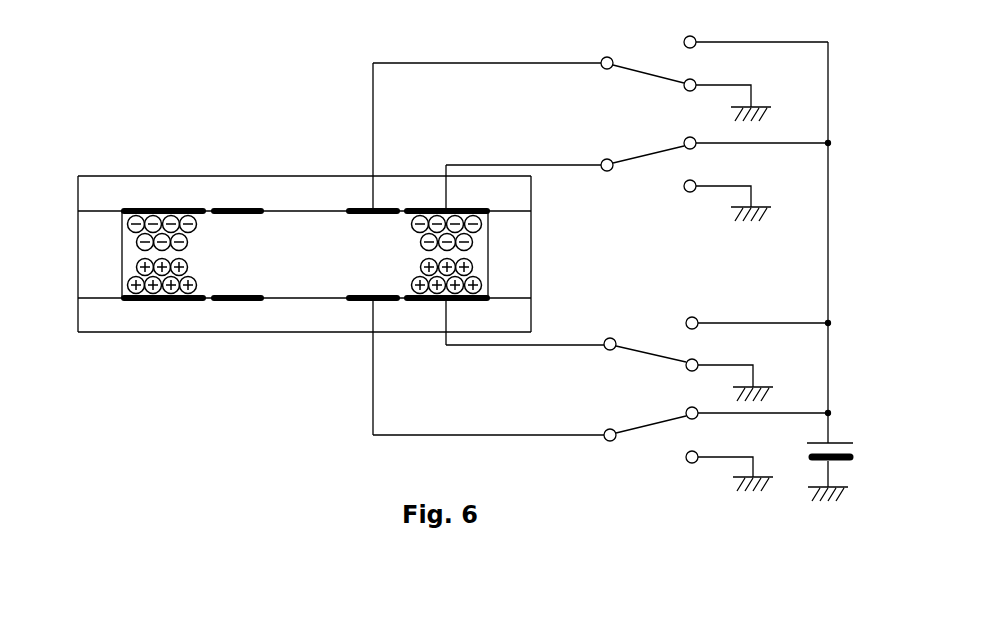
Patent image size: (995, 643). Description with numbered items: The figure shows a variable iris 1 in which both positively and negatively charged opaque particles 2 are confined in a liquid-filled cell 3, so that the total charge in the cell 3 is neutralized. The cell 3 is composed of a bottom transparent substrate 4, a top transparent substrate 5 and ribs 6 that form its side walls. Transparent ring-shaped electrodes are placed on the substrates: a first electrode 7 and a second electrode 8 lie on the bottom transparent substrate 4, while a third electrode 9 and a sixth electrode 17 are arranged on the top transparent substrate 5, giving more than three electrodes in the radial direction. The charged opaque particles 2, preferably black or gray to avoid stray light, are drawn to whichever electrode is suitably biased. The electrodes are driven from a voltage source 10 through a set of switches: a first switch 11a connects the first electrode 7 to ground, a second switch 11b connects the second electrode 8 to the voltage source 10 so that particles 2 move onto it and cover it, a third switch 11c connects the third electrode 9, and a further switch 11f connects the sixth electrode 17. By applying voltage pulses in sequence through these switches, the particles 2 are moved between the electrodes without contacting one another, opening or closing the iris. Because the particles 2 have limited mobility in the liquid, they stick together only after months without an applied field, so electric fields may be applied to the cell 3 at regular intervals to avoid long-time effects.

The variable iris 1 is at (210, 152).
The charged opaque particles 2 is at (197, 239).
The cell 3 is at (317, 238).
The bottom transparent substrate 4 is at (303, 333).
The top transparent substrate 5 is at (303, 176).
The ribs 6 is at (78, 262).
The first electrode 7 is at (157, 300).
The second electrode 8 is at (228, 300).
The third electrode 9 is at (140, 210).
The sixth electrode 17 is at (235, 210).
The voltage source 10 is at (805, 450).
The first switch 11a is at (650, 359).
The second switch 11b is at (657, 448).
The third switch 11c is at (655, 173).
The switch 11f is at (645, 78).